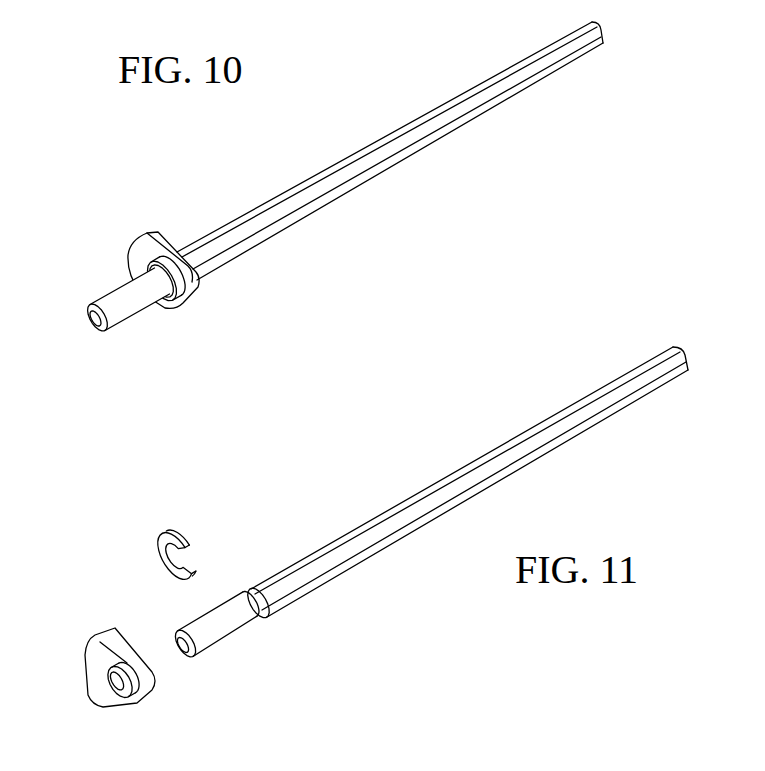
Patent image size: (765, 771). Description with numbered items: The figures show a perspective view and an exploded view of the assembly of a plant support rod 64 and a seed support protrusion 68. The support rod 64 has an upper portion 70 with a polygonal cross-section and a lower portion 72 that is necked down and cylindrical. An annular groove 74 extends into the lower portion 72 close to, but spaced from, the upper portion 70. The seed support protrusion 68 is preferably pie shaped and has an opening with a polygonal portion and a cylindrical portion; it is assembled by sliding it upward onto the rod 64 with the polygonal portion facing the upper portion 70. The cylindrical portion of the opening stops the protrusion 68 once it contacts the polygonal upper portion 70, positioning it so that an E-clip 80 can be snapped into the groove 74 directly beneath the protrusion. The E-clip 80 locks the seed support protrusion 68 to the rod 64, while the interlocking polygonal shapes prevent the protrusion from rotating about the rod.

In FIG. 10, the plant support rod 64 is at (390, 151).
In FIG. 11, the plant support rod 64 is at (469, 479).
In FIG. 10, the seed support protrusion 68 is at (163, 242).
In FIG. 11, the seed support protrusion 68 is at (93, 668).
In FIG. 10, the upper portion 70 is at (490, 90).
In FIG. 11, the upper portion 70 is at (452, 487).
In FIG. 10, the lower portion 72 is at (120, 310).
In FIG. 11, the lower portion 72 is at (210, 637).
In FIG. 11, the annular groove 74 is at (260, 622).
In FIG. 10, the E-clip 80 is at (150, 271).
In FIG. 11, the E-clip 80 is at (174, 528).